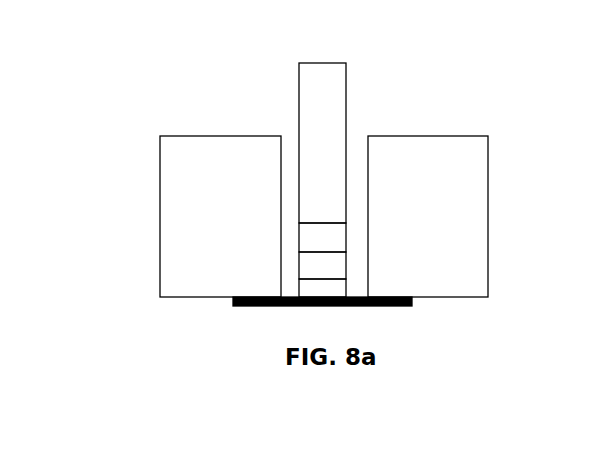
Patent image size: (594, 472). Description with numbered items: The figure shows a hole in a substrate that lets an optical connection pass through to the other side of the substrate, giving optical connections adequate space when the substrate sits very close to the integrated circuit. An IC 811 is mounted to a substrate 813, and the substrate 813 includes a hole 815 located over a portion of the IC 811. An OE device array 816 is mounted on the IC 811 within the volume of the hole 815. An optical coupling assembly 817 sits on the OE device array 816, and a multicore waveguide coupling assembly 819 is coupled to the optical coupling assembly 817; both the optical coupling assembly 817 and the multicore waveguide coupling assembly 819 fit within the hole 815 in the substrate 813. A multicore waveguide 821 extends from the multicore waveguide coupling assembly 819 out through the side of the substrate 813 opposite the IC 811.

The IC 811 is at (393, 297).
The substrate 813 is at (160, 247).
The hole 815 is at (293, 260).
The OE device array 816 is at (346, 290).
The optical coupling assembly 817 is at (346, 263).
The multicore waveguide coupling assembly 819 is at (346, 234).
The multicore waveguide 821 is at (299, 85).